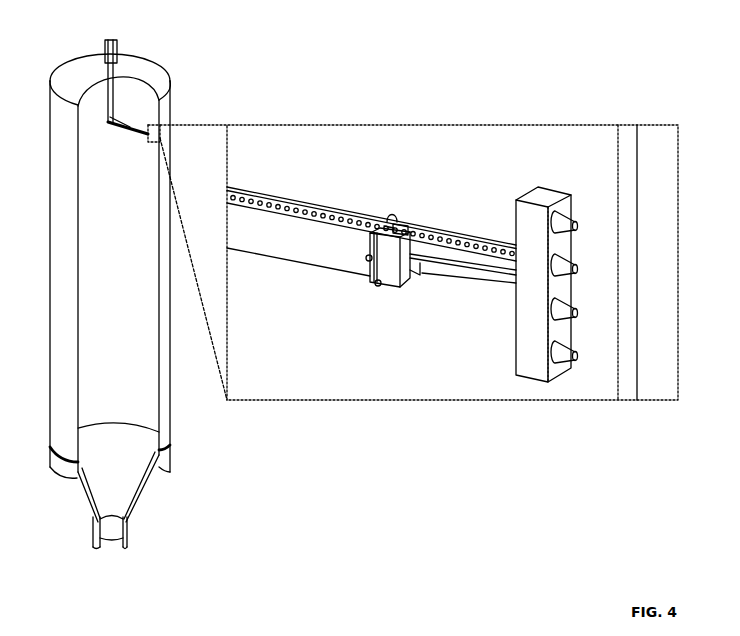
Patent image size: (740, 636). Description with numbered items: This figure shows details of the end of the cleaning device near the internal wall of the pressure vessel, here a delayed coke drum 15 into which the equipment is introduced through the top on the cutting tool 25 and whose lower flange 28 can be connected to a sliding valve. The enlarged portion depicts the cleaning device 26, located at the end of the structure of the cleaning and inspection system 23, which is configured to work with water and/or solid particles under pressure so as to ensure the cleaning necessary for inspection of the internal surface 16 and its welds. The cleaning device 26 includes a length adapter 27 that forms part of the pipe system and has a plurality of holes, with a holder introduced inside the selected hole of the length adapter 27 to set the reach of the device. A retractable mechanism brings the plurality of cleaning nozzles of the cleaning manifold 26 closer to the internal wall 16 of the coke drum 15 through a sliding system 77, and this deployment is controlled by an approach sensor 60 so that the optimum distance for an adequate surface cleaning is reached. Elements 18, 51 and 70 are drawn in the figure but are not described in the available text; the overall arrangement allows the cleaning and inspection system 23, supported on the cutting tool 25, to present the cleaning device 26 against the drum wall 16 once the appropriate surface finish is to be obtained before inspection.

The delayed coke drum 15 is at (70, 60).
The internal surface 16 is at (160, 287).
The conical bottom 18 is at (72, 485).
The cleaning and inspection system 23 is at (258, 250).
The cutting tool 25 is at (112, 94).
The cleaning device 26 is at (528, 302).
The length adapter 27 is at (253, 192).
The lower flange 28 is at (127, 529).
The tank interior 51 is at (177, 301).
The approach sensor 60 is at (530, 380).
The clamp 70 is at (407, 228).
The sliding system 77 is at (366, 259).